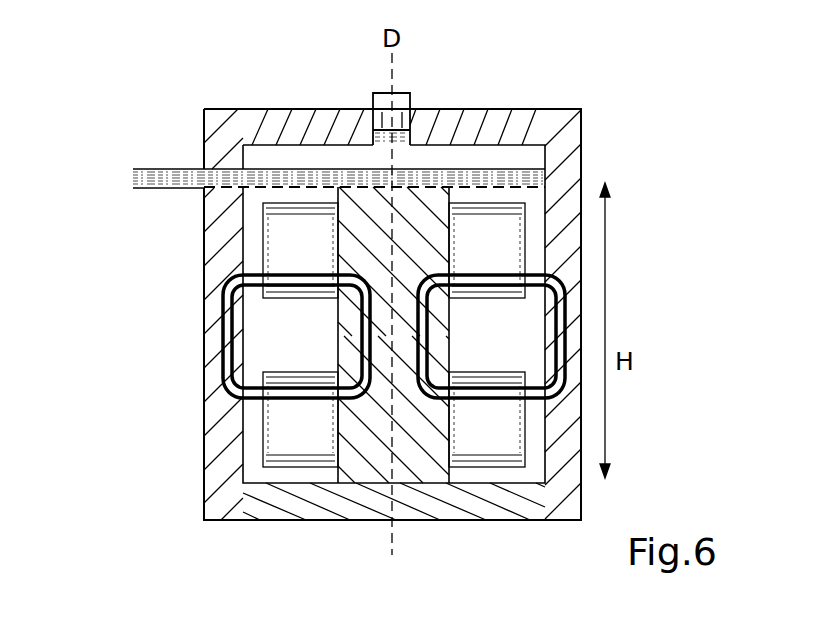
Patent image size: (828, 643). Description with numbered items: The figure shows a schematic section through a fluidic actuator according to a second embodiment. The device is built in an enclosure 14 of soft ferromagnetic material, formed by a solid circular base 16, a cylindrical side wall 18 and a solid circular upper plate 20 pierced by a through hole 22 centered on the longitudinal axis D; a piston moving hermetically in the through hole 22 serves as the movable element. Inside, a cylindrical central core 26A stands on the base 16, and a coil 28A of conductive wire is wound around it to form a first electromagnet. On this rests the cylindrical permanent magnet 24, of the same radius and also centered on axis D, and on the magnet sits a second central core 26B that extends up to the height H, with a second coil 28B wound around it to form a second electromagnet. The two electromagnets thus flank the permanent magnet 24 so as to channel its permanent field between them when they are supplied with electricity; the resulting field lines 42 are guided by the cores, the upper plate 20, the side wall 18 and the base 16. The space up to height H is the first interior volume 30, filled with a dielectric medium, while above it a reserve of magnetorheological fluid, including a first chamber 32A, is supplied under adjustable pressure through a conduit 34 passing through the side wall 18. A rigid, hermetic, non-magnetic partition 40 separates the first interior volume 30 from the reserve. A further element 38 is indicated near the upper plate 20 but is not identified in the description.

The enclosure 14 is at (202, 476).
The base 16 is at (427, 500).
The side wall 18 is at (207, 252).
The upper plate 20 is at (470, 118).
The through hole 22 is at (402, 112).
The permanent magnet 24 is at (413, 347).
The central core 26A is at (418, 436).
The central core 26B is at (418, 257).
The coil 28A is at (319, 449).
The coil 28B is at (319, 256).
The first interior volume 30 is at (528, 313).
The first chamber 32A is at (490, 158).
The conduit 34 is at (204, 177).
The cover plate 38 is at (295, 110).
The partition 40 is at (515, 185).
The field lines 42 is at (210, 326).